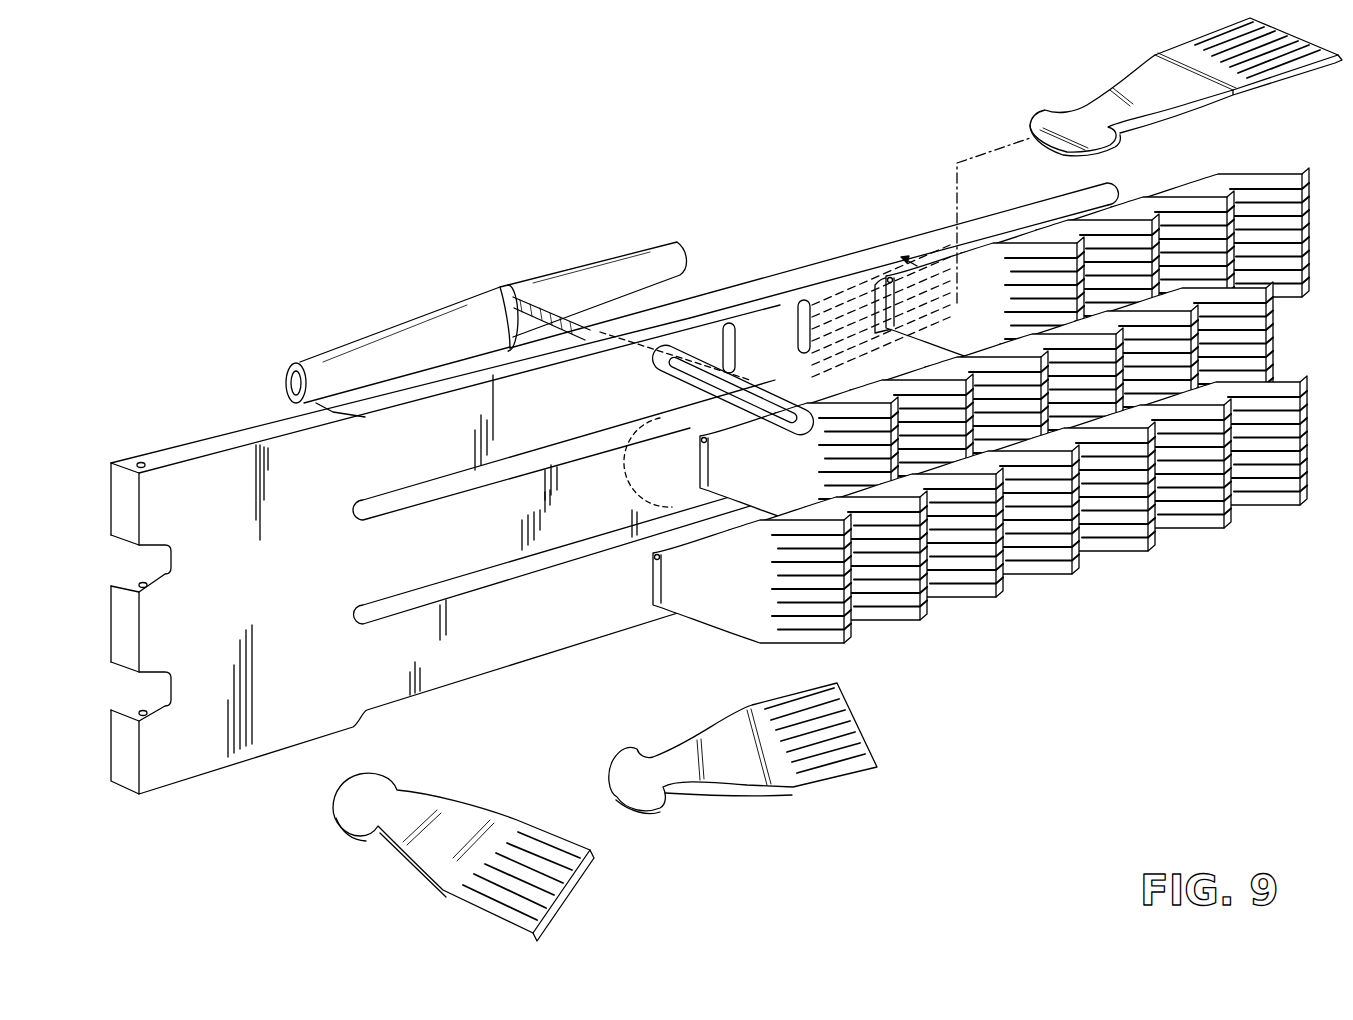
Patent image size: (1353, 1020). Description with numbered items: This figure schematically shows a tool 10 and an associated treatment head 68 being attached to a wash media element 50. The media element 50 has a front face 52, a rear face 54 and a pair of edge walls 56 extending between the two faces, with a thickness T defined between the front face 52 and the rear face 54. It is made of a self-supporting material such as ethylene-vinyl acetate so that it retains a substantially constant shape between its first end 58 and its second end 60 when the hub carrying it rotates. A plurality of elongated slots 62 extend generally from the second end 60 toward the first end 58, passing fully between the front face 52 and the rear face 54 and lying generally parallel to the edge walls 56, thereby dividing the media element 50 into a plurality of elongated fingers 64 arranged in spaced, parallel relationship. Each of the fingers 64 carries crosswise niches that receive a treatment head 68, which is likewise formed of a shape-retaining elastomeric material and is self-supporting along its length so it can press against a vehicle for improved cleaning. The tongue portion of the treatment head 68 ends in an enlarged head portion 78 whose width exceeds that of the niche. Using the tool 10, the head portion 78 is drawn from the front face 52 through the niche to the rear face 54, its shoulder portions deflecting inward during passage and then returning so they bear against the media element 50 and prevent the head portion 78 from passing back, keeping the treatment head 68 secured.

The tool 10 is at (320, 360).
The media element 50 is at (654, 303).
The front face 52 is at (707, 327).
The rear face 54 is at (436, 390).
The edge walls 56 is at (458, 357).
The first end 58 is at (121, 499).
The second end 60 is at (1125, 183).
The elongated slots 62 is at (478, 578).
The elongated fingers 64 is at (752, 325).
The treatment head 68 is at (448, 846).
The enlarged head portion 78 is at (622, 462).
The thickness T is at (864, 240).